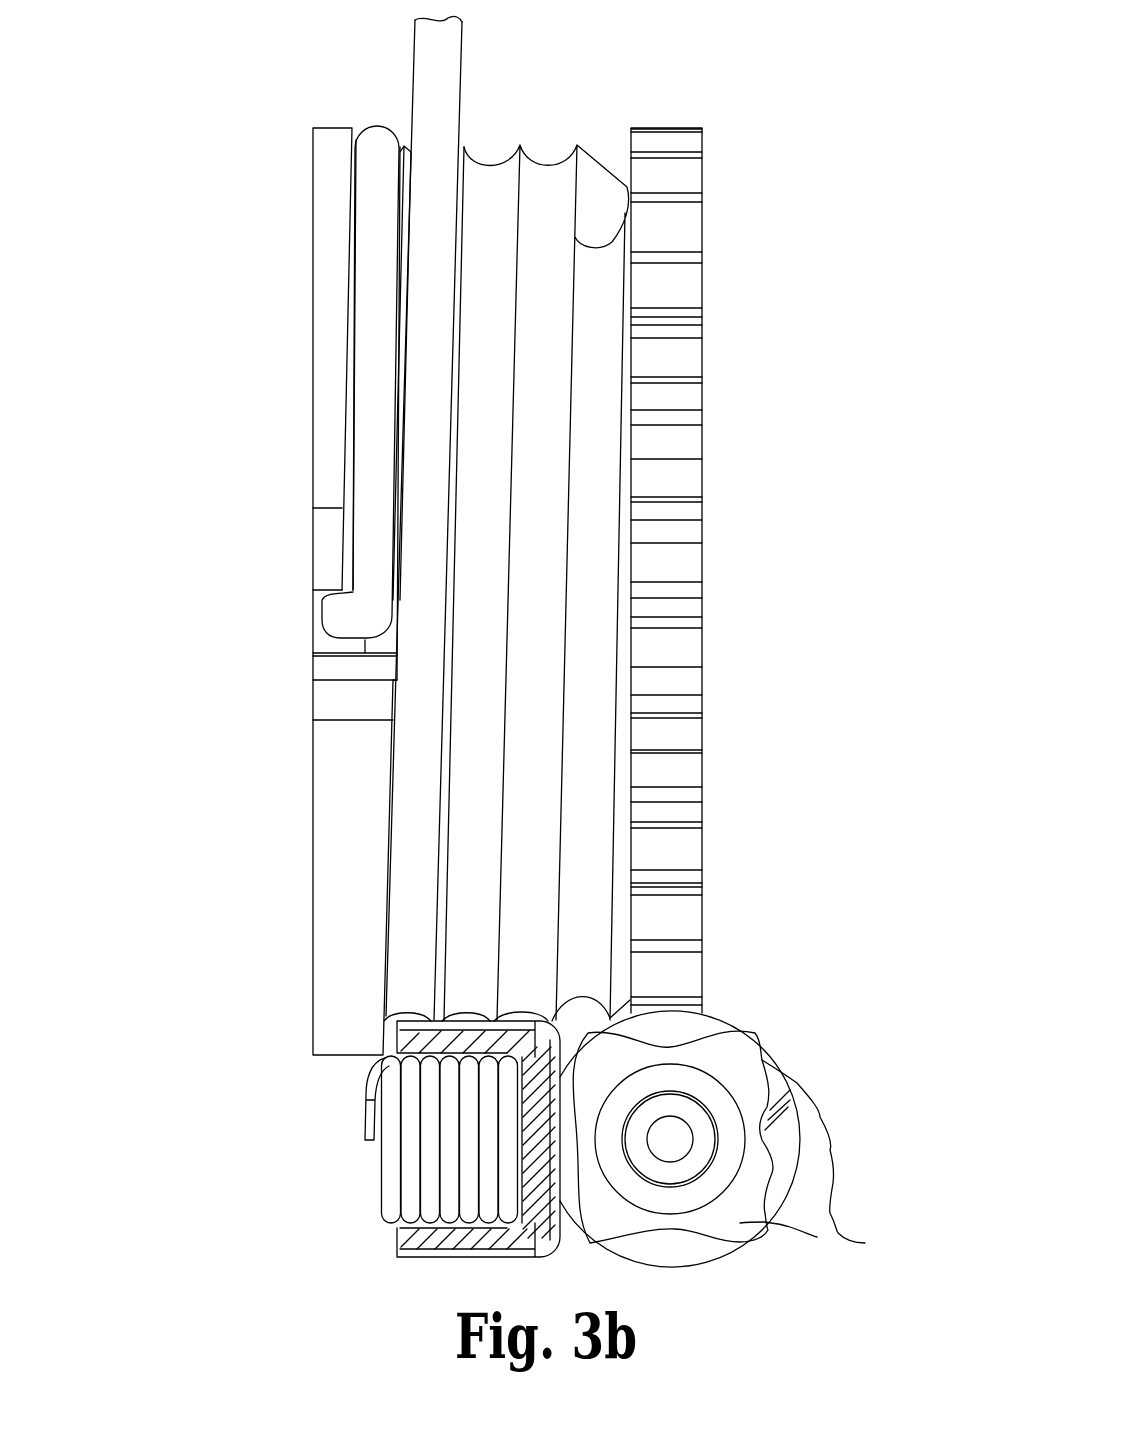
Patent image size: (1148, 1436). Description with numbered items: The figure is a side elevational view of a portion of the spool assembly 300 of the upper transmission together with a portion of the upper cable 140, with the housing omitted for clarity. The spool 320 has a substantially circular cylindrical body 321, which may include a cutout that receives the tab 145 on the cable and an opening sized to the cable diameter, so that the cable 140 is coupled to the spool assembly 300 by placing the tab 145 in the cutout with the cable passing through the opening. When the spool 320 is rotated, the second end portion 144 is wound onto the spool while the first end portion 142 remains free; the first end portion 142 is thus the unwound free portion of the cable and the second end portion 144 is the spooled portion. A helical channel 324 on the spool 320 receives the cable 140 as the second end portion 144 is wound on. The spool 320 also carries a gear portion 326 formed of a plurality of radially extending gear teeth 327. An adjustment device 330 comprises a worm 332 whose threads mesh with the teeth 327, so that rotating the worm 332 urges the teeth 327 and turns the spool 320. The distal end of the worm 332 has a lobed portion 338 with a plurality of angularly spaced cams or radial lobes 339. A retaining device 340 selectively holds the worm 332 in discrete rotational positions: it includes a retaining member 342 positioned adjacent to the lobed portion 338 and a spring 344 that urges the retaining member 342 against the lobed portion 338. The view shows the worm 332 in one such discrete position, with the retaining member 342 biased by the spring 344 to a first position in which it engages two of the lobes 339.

The spool assembly 300 is at (218, 242).
The spool 320 is at (273, 368).
The substantially circular cylindrical body 321 is at (326, 130).
The upper cable 140 is at (515, 76).
The first end portion 142 is at (405, 40).
The second end portion 144 is at (401, 114).
The tab 145 is at (320, 631).
The helical channel 324 is at (552, 153).
The gear portion 326 is at (672, 116).
The gear teeth 327 is at (683, 357).
The adjustment device 330 is at (758, 983).
The worm 332 is at (743, 1032).
The lobed portion 338 is at (682, 1243).
The radial lobes 339 is at (817, 1237).
The retaining device 340 is at (327, 1142).
The retaining member 342 is at (451, 1243).
The spring 344 is at (392, 1192).